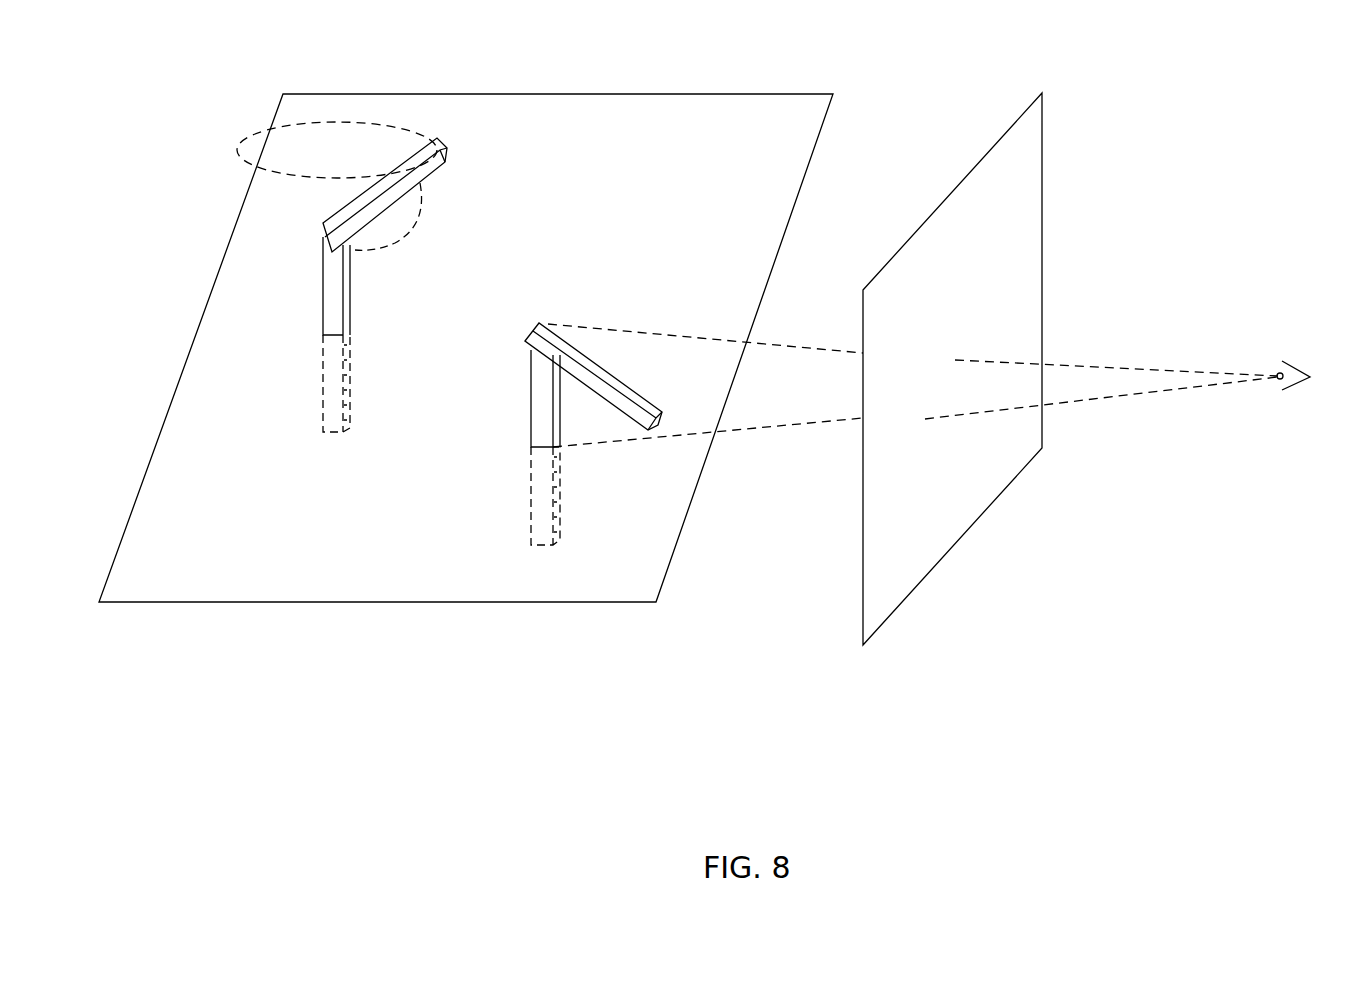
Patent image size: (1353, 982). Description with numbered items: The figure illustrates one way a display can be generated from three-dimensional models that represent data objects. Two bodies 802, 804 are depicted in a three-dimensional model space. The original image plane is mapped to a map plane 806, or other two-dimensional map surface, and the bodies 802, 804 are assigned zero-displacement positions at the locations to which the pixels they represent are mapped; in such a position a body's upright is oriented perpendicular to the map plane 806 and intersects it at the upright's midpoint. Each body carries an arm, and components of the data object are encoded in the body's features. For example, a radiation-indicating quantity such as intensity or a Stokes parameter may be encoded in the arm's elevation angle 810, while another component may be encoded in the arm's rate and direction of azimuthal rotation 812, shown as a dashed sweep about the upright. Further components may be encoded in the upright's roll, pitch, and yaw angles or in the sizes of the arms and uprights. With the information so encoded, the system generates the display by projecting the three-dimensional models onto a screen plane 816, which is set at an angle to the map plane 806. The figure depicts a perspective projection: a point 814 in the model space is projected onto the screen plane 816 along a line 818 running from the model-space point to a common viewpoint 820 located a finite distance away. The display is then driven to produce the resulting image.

The body 802 is at (258, 398).
The body 804 is at (620, 277).
The map plane 806 is at (625, 94).
The arm's elevation angle 810 is at (420, 202).
The arm's rate and direction of azimuthal rotation 812 is at (238, 150).
The point 814 is at (540, 322).
The screen plane 816 is at (1043, 120).
The line 818 is at (806, 352).
The common viewpoint 820 is at (1280, 372).